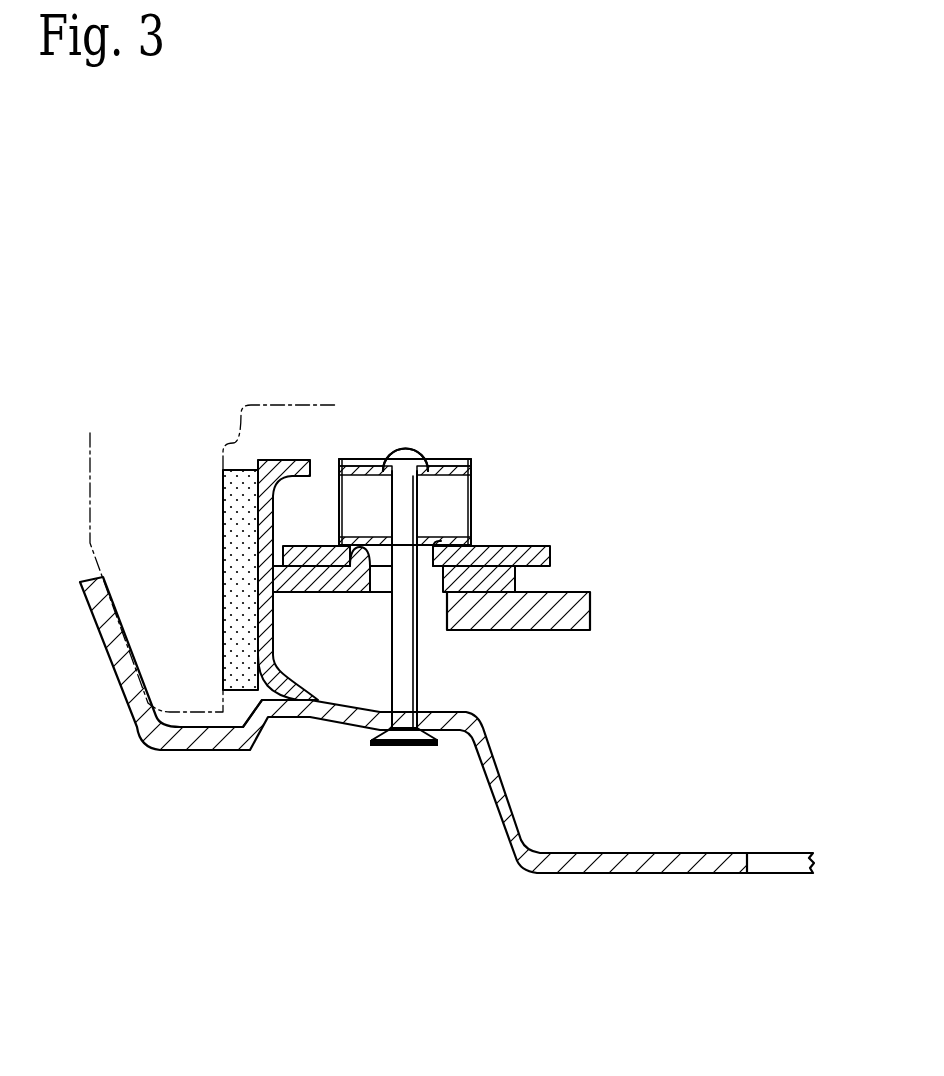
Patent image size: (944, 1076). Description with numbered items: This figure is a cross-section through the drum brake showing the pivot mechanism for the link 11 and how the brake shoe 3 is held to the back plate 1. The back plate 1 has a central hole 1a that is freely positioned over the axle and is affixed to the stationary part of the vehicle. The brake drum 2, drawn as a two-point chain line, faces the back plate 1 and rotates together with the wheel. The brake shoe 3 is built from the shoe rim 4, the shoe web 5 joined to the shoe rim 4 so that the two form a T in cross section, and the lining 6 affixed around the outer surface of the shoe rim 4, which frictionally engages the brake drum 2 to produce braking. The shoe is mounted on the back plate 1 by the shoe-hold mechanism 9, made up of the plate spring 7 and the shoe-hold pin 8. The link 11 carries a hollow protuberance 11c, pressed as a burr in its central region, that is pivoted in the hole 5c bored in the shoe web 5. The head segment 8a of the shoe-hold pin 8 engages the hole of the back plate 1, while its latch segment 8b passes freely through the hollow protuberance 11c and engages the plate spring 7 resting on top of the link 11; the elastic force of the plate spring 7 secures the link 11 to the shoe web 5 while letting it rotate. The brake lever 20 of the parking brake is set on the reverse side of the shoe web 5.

The back plate 1 is at (645, 874).
The central hole 1a is at (750, 873).
The brake drum 2 is at (89, 459).
The brake shoe 3 is at (220, 549).
The shoe rim 4 is at (272, 705).
The shoe web 5 is at (325, 593).
The hole 5c is at (367, 593).
The lining 6 is at (223, 610).
The plate spring 7 is at (464, 459).
The shoe-hold pin 8 is at (416, 507).
The head segment 8a is at (398, 746).
The latch segment 8b is at (407, 447).
The shoe-hold mechanism 9 is at (360, 452).
The link 11 is at (550, 555).
The hollow protuberance 11c is at (436, 542).
The brake lever 20 is at (590, 605).